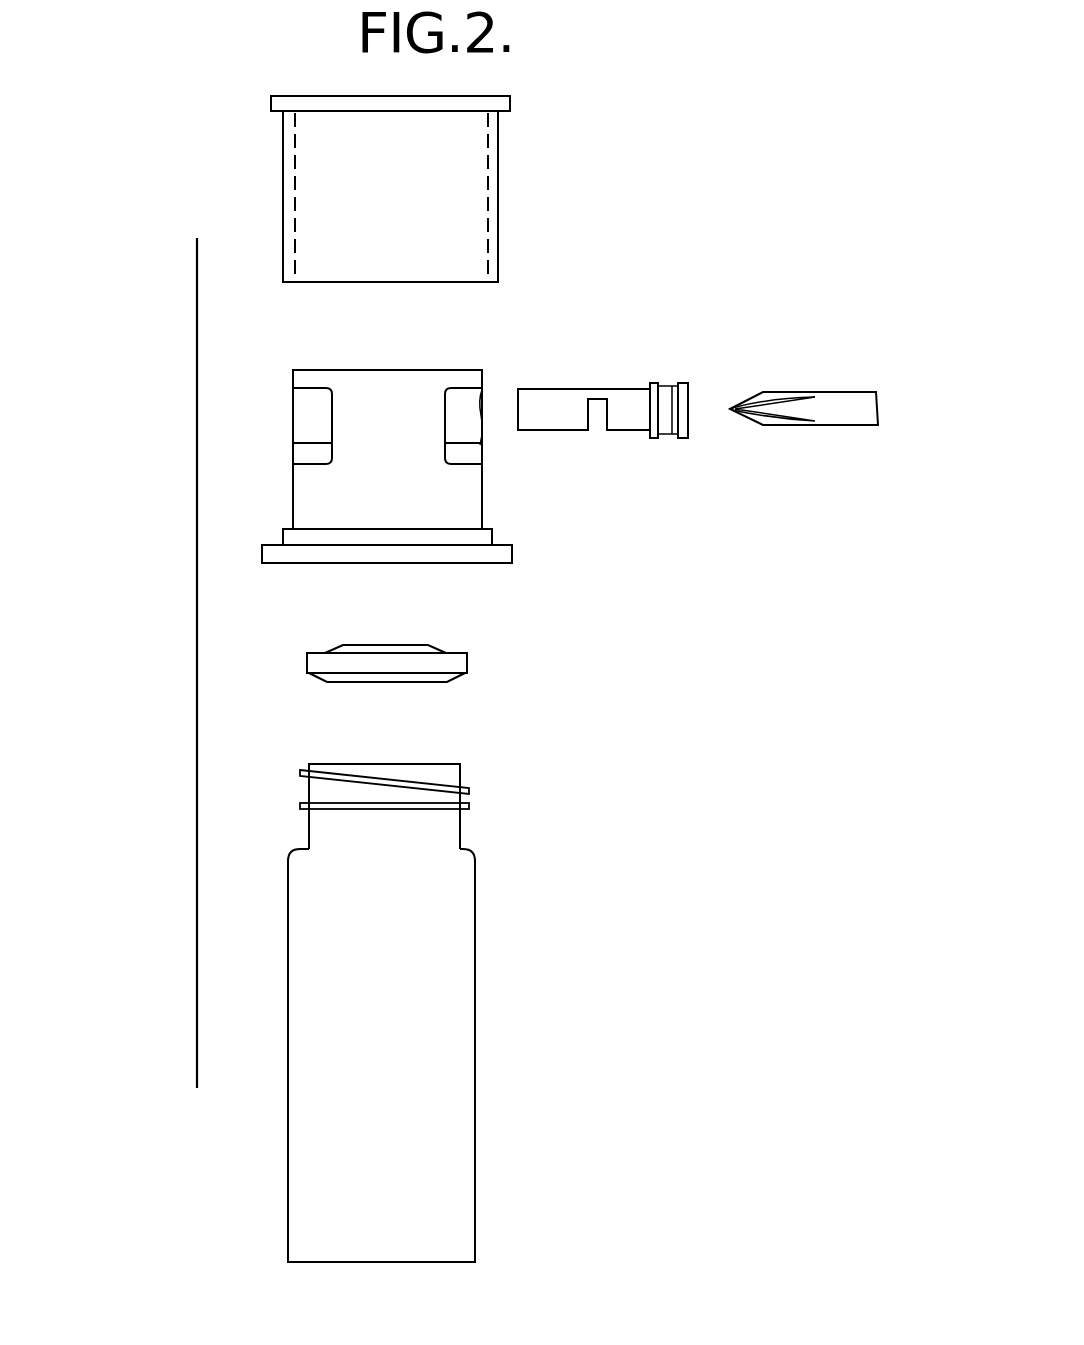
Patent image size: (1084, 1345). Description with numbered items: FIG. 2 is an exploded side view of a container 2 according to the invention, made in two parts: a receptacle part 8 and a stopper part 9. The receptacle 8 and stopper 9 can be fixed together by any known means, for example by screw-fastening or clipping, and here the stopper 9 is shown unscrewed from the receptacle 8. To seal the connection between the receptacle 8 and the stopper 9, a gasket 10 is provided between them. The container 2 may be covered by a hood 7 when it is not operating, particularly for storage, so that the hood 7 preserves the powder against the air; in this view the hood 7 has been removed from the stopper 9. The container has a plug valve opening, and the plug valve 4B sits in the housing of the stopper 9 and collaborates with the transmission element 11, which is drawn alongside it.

The container 2 is at (197, 527).
The hood 7 is at (460, 179).
The stopper part 9 is at (422, 499).
The plug valve 4B is at (575, 403).
The transmission element 11 is at (827, 409).
The gasket 10 is at (437, 668).
The receptacle part 8 is at (452, 1003).